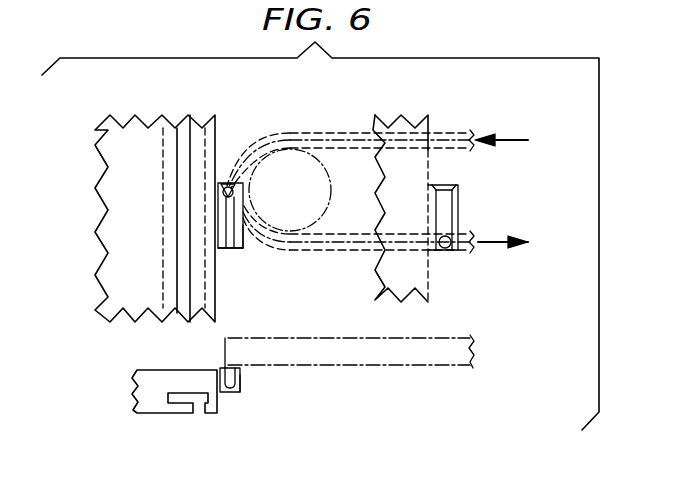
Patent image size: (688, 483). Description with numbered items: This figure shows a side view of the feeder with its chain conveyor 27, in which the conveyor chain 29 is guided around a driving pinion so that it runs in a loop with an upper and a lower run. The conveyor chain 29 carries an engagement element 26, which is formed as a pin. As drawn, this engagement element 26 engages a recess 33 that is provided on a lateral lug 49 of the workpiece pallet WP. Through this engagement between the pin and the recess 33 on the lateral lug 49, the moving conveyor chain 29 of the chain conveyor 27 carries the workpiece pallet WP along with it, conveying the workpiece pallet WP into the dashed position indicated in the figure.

The workpiece pallet WP is at (177, 118).
The engagement element 26 is at (225, 185).
The chain conveyor 27 is at (354, 250).
The conveyor chain 29 is at (340, 235).
The recess 33 is at (233, 250).
The lateral lug 49 is at (245, 237).